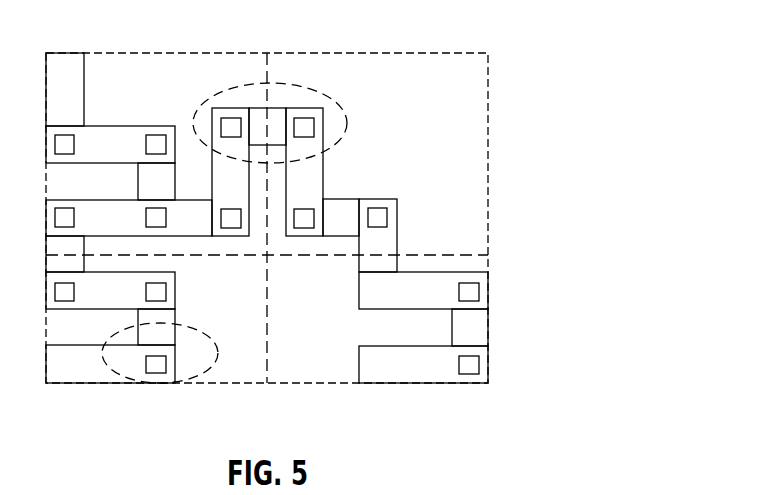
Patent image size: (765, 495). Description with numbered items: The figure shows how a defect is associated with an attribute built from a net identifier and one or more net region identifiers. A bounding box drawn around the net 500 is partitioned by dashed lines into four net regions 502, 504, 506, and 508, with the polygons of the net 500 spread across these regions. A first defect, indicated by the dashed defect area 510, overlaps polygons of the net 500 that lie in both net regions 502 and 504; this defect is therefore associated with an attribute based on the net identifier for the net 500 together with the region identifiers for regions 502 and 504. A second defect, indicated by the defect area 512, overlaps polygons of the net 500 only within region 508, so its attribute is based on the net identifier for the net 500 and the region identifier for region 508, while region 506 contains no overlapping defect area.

The net 500 is at (357, 199).
The net region 502 is at (195, 50).
The net region 504 is at (398, 50).
The net region 506 is at (313, 385).
The net region 508 is at (222, 385).
The defect area 510 is at (343, 118).
The defect area 512 is at (203, 335).